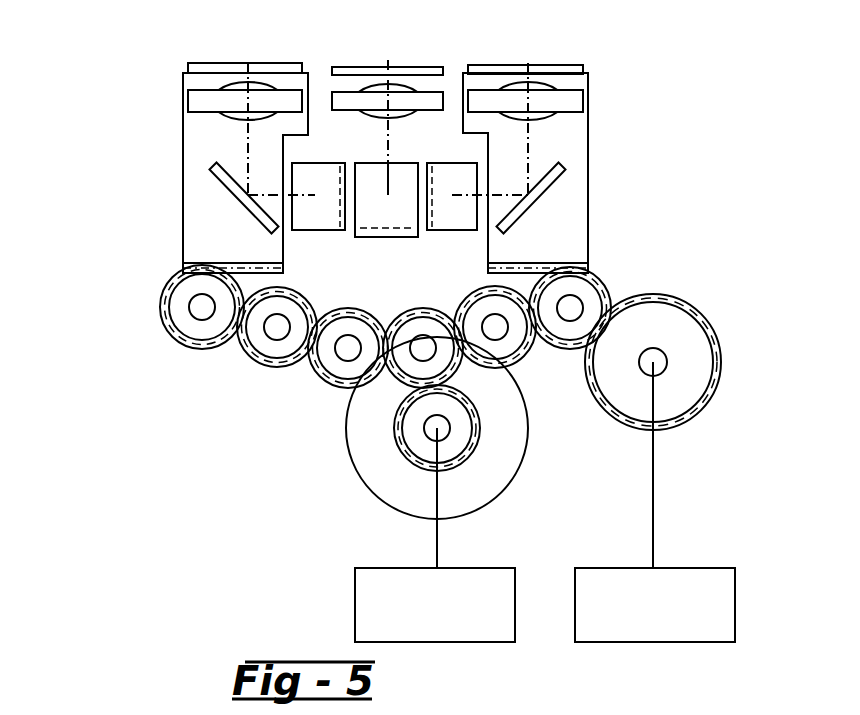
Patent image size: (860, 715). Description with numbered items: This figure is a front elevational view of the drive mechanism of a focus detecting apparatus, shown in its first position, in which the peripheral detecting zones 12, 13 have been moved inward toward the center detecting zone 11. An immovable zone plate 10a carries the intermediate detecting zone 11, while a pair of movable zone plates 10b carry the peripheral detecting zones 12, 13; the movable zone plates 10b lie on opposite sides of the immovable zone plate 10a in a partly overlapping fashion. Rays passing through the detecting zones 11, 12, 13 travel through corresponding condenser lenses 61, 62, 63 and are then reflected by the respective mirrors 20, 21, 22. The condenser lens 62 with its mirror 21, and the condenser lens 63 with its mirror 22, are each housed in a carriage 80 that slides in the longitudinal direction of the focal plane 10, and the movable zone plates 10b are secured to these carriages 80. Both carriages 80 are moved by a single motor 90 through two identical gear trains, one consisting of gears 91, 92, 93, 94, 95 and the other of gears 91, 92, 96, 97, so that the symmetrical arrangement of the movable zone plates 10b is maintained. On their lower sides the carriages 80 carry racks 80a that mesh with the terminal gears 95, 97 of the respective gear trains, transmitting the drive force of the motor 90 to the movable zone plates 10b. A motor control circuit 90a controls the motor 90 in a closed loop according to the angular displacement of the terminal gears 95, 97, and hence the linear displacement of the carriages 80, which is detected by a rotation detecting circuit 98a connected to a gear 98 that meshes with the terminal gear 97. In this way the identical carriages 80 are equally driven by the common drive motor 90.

The focal plane 10 is at (166, 52).
The immovable zone plate 10a is at (343, 66).
The movable zone plates 10b is at (183, 68).
The intermediate detecting zone 11 is at (387, 88).
The peripheral detecting zone 12 is at (245, 87).
The peripheral detecting zone 13 is at (525, 88).
The mirror 20 is at (388, 237).
The second mirror 21 is at (212, 173).
The third mirror 22 is at (318, 230).
The condenser lens 61 is at (403, 85).
The condenser lens 62 is at (248, 82).
The condenser lens 63 is at (508, 82).
The carriages 80 is at (183, 132).
The racks 80a is at (230, 266).
The motor 90 is at (368, 477).
The motor control circuit 90a is at (477, 568).
The gear 91 is at (410, 438).
The gear 92 is at (426, 382).
The gear 93 is at (328, 362).
The gear 94 is at (252, 363).
The terminal gear 95 is at (195, 330).
The gear 96 is at (518, 363).
The terminal gear 97 is at (568, 345).
The gear 98 is at (627, 412).
The rotation detecting circuit 98a is at (675, 568).